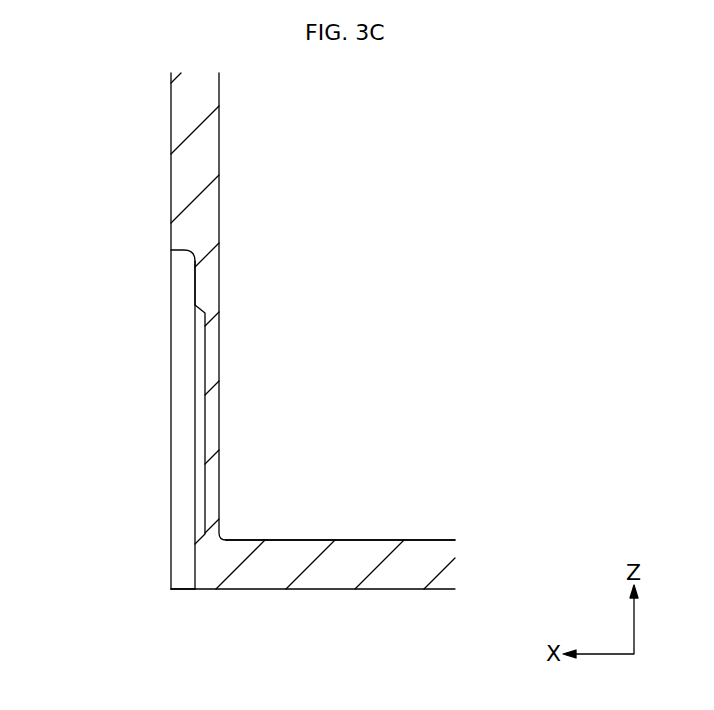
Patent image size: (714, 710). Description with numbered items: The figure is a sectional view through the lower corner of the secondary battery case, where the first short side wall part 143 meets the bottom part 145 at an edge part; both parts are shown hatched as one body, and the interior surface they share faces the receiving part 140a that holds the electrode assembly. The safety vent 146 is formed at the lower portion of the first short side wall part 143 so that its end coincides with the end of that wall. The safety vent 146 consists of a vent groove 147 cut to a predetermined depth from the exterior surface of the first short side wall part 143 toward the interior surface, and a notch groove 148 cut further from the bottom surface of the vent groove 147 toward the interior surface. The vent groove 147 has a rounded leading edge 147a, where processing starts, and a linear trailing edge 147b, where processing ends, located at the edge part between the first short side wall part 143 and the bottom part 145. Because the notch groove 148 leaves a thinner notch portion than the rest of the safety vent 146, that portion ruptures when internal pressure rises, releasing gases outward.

The first short side wall part 143 is at (185, 150).
The bottom part 145 is at (398, 570).
The receiving part 140a is at (296, 511).
The safety vent 146 is at (167, 491).
The vent groove 147 is at (179, 313).
The leading edge 147a is at (182, 250).
The trailing edge 147b is at (183, 589).
The notch groove 148 is at (196, 409).